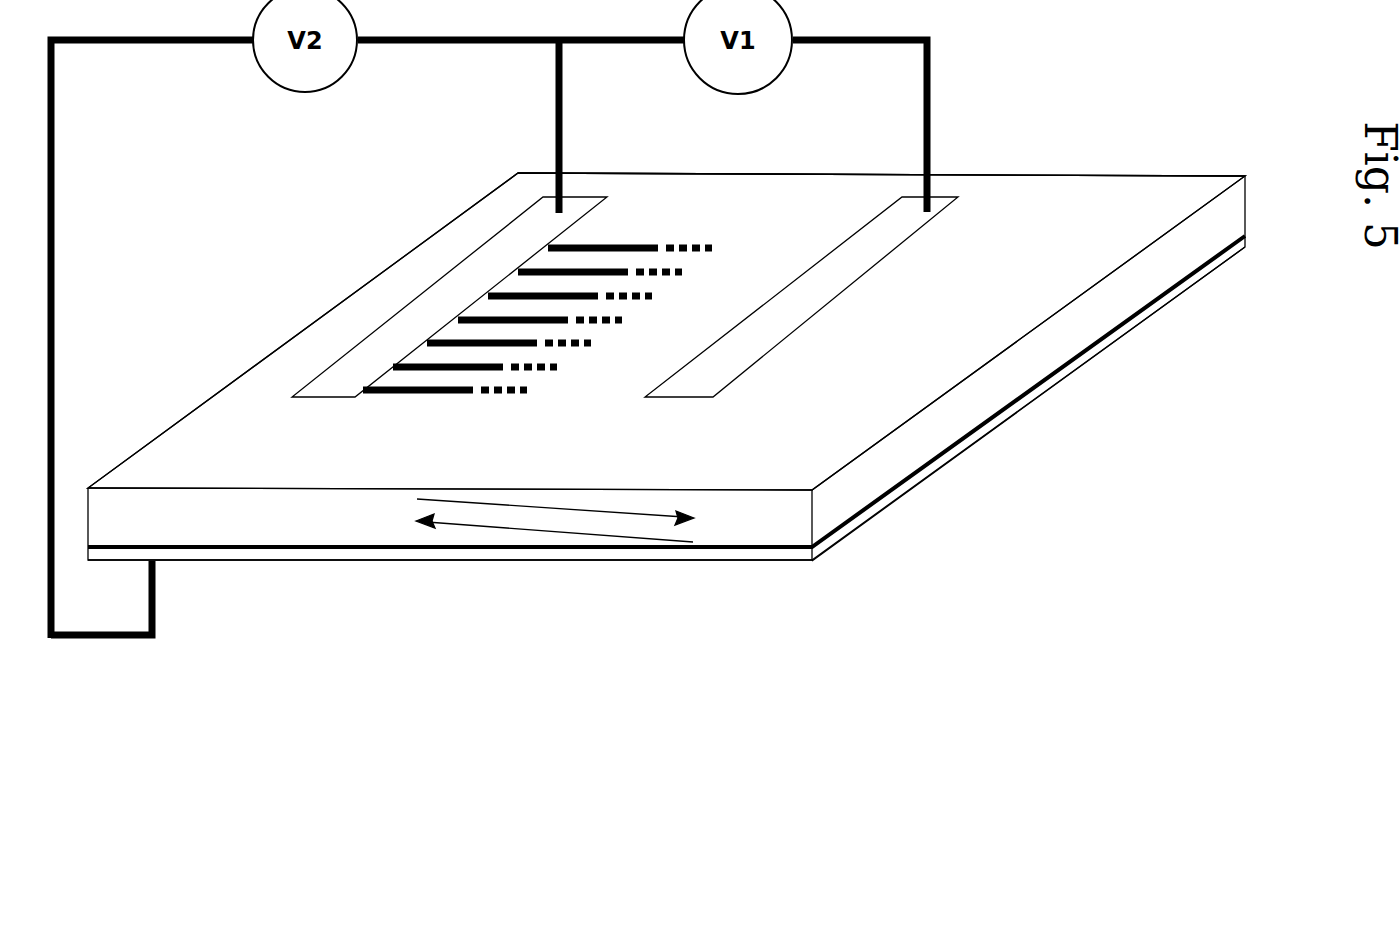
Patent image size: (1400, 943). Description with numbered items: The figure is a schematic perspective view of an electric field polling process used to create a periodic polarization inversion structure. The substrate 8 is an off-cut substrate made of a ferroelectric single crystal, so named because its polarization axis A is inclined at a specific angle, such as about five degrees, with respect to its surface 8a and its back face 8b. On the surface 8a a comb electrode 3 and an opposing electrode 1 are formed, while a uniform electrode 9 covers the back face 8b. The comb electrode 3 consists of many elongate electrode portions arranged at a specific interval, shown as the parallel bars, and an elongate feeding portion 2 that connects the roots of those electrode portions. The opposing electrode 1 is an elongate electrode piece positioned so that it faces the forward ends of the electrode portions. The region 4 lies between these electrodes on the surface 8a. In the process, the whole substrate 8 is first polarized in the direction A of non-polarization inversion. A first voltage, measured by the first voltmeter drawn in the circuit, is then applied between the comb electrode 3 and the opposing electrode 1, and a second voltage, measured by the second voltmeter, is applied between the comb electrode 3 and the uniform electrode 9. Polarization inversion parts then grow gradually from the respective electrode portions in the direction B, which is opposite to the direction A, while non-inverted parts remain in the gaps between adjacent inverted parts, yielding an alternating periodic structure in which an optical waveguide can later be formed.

The opposing electrode 1 is at (833, 283).
The feeding portion 2 is at (493, 258).
The comb electrode 3 is at (585, 374).
The substrate surface 4 is at (688, 336).
The substrate 8 is at (1213, 218).
The surface 8a is at (1152, 202).
The back face 8b is at (1172, 292).
The uniform electrode 9 is at (948, 462).
The polarization axis / direction of non-polarization inversion A is at (566, 532).
The direction of polarization inversion B is at (645, 515).